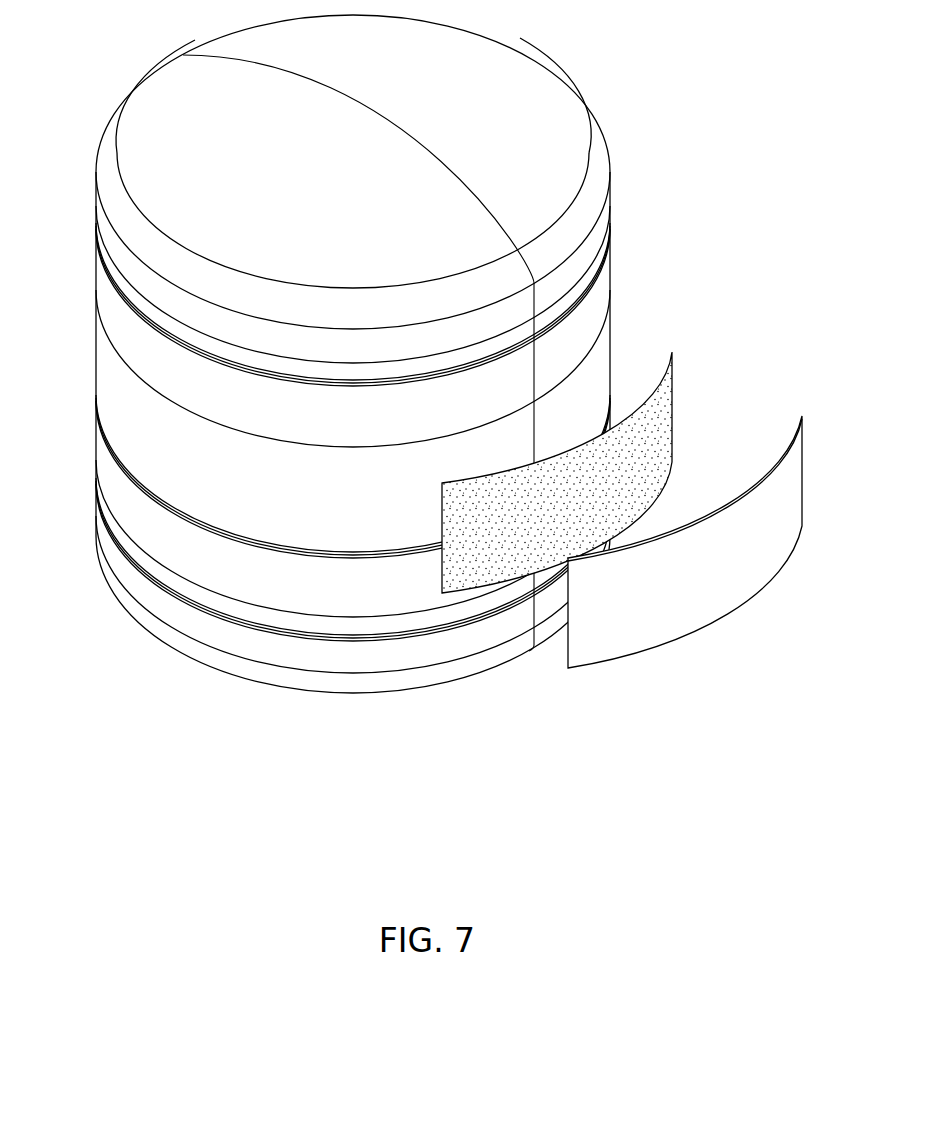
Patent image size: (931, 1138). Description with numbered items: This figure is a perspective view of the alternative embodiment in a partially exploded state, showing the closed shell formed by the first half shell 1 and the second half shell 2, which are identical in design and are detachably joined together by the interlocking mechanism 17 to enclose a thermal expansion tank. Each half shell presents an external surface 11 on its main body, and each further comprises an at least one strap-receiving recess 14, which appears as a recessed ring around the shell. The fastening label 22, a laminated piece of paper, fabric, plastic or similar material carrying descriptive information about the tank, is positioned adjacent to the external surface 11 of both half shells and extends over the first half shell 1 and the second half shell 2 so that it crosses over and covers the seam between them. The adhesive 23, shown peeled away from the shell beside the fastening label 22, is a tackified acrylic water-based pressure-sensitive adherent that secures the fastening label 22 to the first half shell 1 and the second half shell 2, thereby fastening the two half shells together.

The first half shell 1 is at (614, 101).
The second half shell 2 is at (94, 598).
The external surface 11 is at (340, 598).
The strap-receiving recess 14 is at (96, 363).
The interlocking mechanism 17 is at (233, 52).
The fastening label 22 is at (758, 588).
The adhesive 23 is at (647, 462).